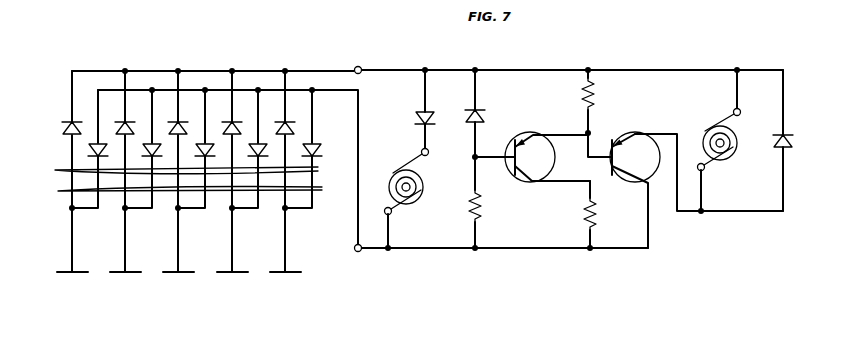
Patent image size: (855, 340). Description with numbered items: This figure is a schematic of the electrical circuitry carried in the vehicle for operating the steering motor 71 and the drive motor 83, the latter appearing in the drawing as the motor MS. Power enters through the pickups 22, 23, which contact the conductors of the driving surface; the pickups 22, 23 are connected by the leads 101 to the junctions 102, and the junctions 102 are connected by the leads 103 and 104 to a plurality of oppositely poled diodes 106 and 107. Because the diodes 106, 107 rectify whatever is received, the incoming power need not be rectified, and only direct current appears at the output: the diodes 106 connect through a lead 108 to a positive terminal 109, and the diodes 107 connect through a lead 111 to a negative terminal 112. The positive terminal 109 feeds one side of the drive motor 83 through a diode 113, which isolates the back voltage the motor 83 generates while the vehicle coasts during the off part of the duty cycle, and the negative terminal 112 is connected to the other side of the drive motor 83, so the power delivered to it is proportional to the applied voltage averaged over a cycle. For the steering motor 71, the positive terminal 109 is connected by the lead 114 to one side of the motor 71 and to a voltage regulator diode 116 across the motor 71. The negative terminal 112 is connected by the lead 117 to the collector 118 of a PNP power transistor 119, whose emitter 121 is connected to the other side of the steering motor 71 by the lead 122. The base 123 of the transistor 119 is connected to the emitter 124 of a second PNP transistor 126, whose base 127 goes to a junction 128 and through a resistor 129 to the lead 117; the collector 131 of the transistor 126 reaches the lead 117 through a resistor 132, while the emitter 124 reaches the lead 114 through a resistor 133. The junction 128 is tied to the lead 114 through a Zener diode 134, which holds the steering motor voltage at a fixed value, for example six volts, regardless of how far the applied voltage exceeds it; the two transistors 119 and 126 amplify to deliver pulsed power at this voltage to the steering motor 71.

The pickup 22 is at (128, 274).
The pickup 23 is at (172, 274).
The steering motor 71 is at (736, 131).
The drive motor 83 is at (400, 171).
The lead 101 is at (75, 257).
The junction 102 is at (77, 214).
The lead 103 is at (188, 171).
The lead 104 is at (190, 190).
The diode 106 is at (66, 120).
The diode 107 is at (93, 142).
The lead 108 is at (338, 69).
The positive terminal 109 is at (372, 67).
The lead 111 is at (356, 251).
The negative terminal 112 is at (363, 253).
The diode 113 is at (415, 118).
The lead 114 is at (689, 68).
The voltage regulator diode 116 is at (791, 134).
The lead 117 is at (635, 249).
The collector 118 is at (633, 180).
The power transistor 119 is at (613, 134).
The emitter 121 is at (640, 136).
The lead 122 is at (690, 213).
The base 123 is at (606, 164).
The emitter 124 is at (527, 136).
The second transistor 126 is at (515, 134).
The base 127 is at (496, 154).
The junction 128 is at (470, 156).
The resistor 129 is at (483, 209).
The collector 131 is at (528, 180).
The resistor 132 is at (597, 207).
The resistor 133 is at (600, 97).
The Zener diode 134 is at (485, 114).
The starter motor MS is at (731, 162).